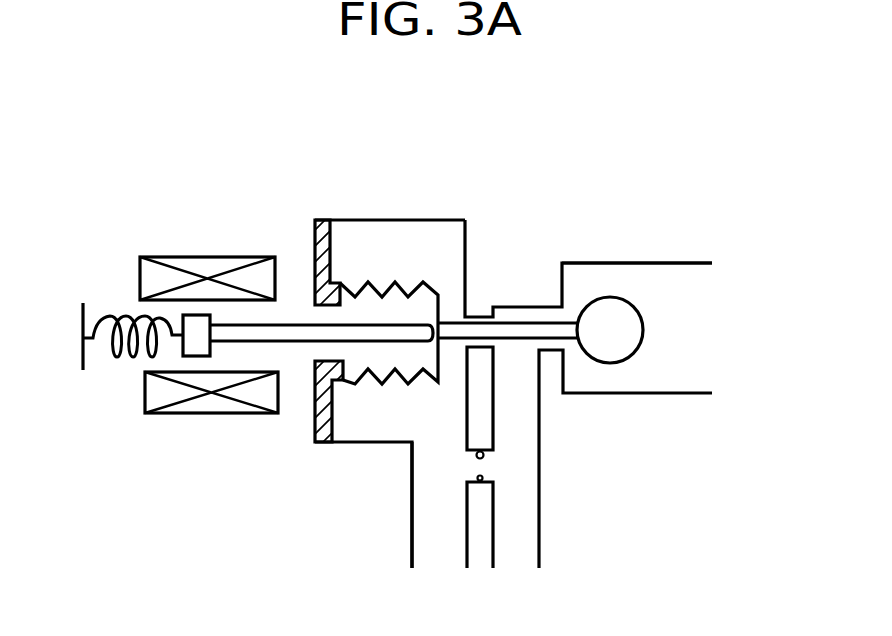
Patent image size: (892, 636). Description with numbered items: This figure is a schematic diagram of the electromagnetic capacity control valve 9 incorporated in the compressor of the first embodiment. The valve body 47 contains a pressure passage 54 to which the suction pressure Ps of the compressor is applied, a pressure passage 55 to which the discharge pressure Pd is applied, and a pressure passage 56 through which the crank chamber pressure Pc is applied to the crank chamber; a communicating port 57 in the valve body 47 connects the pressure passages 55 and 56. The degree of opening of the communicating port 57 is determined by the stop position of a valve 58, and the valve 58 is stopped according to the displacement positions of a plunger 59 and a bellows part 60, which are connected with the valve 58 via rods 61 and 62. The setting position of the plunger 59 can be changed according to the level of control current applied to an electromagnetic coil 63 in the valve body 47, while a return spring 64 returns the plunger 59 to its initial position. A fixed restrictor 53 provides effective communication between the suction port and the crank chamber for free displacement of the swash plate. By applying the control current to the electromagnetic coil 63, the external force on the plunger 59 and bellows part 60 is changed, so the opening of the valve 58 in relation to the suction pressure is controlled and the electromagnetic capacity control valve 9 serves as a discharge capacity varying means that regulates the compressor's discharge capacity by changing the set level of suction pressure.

The electromagnetic capacity control valve 9 is at (142, 213).
The valve body 47 is at (690, 265).
The fixed restrictor 53 is at (485, 465).
The pressure passage 54 is at (440, 463).
The pressure passage 55 is at (628, 282).
The pressure passage 56 is at (513, 435).
The communicating port 57 is at (538, 310).
The valve 58 is at (615, 343).
The plunger 59 is at (195, 345).
The bellows part 60 is at (385, 282).
The rod 61 is at (297, 333).
The rod 62 is at (512, 330).
The electromagnetic coil 63 is at (207, 268).
The return spring 64 is at (117, 357).